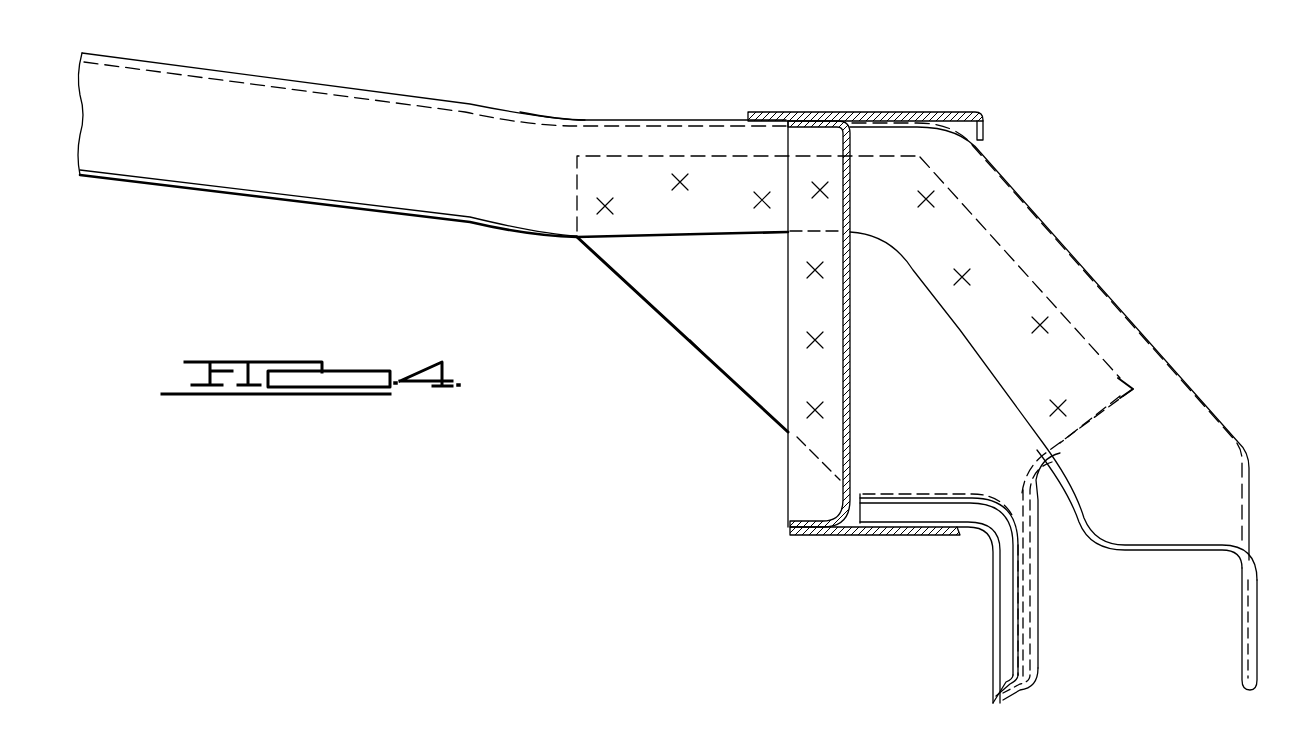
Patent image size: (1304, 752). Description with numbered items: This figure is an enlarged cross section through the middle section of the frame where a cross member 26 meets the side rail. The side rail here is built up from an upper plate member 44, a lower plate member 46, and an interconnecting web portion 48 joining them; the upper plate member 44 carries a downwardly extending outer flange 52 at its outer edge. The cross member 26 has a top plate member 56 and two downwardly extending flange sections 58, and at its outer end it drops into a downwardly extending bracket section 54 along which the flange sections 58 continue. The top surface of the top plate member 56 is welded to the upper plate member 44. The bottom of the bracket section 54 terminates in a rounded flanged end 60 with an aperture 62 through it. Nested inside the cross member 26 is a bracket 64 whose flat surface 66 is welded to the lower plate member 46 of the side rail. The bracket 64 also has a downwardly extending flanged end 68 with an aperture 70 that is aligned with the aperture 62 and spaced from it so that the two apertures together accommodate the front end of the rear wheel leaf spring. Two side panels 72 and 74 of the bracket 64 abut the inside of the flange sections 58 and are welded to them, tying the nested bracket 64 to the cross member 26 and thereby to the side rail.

The cross member 26 is at (465, 105).
The upper plate member 44 is at (958, 111).
The lower plate member 46 is at (873, 536).
The interconnecting web portion 48 is at (852, 384).
The outer flange 52 is at (987, 130).
The bracket section 54 is at (1108, 300).
The top plate member 56 is at (560, 118).
The flange sections 58 is at (545, 153).
The rounded flanged end 60 is at (1248, 665).
The aperture 62 is at (1245, 620).
The bracket 64 is at (1023, 527).
The flat surface 66 is at (927, 524).
The flanged end 68 is at (1025, 656).
The aperture 70 is at (1035, 608).
The side panel 72 is at (755, 380).
The side panel 74 is at (710, 345).